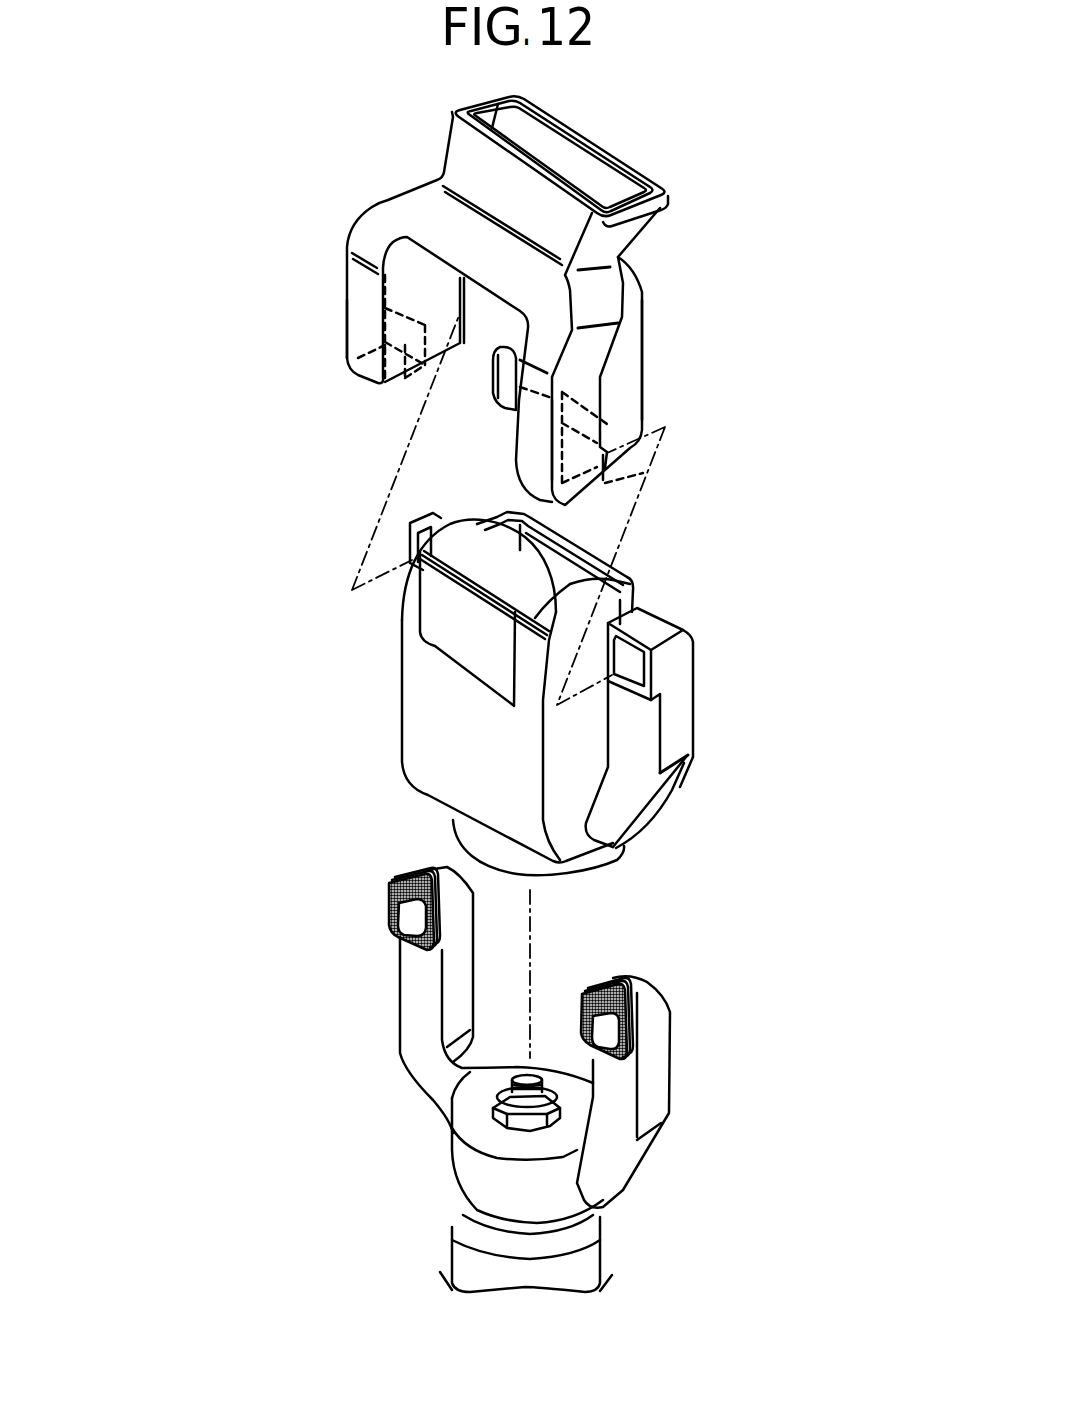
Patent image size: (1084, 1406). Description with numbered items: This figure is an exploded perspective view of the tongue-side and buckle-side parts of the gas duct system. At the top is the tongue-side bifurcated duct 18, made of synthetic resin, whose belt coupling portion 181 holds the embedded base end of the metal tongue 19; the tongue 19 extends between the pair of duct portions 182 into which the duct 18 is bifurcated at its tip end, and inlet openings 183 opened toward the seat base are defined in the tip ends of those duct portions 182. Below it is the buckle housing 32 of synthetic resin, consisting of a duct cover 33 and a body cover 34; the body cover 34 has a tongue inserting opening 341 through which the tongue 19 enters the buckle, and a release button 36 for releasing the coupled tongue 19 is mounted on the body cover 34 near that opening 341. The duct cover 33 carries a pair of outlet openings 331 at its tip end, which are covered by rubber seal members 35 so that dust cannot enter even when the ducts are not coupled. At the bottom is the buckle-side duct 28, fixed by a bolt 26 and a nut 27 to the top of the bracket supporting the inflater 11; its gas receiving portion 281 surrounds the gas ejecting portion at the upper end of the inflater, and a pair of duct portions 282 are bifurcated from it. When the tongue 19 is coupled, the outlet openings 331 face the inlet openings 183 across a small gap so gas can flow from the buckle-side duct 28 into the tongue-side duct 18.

The inflater 11 is at (597, 1262).
The tongue-side bifurcated duct 18 is at (367, 203).
The belt coupling portion 181 is at (627, 171).
The duct portions 182 is at (537, 447).
The inlet openings 183 is at (450, 340).
The tongue 19 is at (492, 374).
The bolt 26 is at (526, 1076).
The nut 27 is at (545, 1092).
The buckle-side duct 28 is at (445, 1190).
The gas receiving portion 281 is at (463, 1160).
The duct portions 282 is at (700, 1058).
The buckle housing 32 is at (386, 705).
The duct cover 33 is at (438, 500).
The outlet openings 331 is at (627, 673).
The body cover 34 is at (443, 773).
The tongue inserting opening 341 is at (553, 550).
The seal members 35 is at (387, 913).
The release button 36 is at (438, 632).